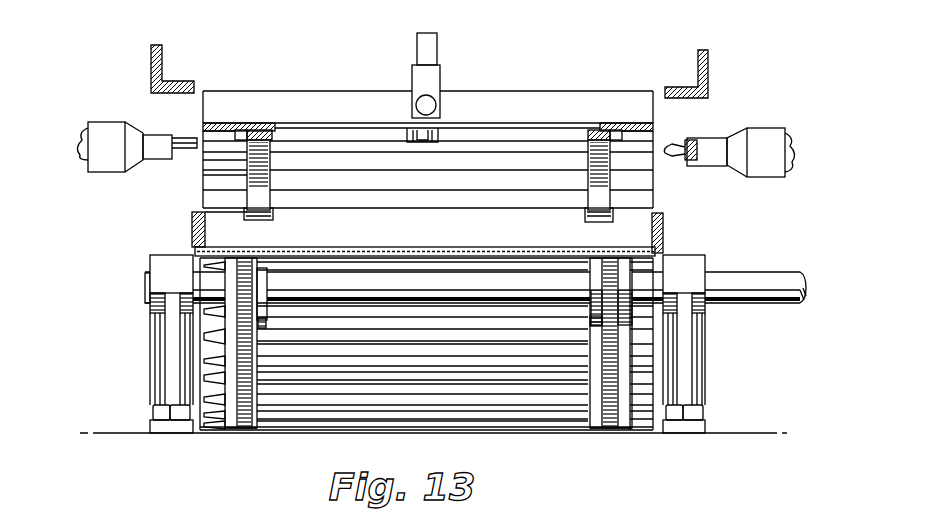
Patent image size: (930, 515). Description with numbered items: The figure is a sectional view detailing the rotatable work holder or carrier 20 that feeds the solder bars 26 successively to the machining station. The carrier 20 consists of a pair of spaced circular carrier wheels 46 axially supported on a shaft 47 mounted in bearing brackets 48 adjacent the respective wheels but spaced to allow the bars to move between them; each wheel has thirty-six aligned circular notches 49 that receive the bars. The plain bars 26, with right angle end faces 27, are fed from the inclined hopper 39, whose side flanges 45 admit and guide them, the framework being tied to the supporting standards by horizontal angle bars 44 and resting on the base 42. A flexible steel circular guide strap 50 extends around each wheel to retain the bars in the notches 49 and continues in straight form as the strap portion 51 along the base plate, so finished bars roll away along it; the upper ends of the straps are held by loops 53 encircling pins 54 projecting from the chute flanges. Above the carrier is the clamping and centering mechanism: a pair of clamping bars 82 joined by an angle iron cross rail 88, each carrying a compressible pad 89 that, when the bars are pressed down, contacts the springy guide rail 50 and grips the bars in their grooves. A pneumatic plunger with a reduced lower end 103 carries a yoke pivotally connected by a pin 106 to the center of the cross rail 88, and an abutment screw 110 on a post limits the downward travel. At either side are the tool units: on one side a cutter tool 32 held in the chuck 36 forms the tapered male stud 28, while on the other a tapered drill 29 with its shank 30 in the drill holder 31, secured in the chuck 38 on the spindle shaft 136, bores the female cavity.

The work holder or carrier 20 is at (237, 178).
The solder bar 26 is at (645, 198).
The right angle end face 27 is at (203, 176).
The male member or stud 28 is at (214, 428).
The tapered drill 29 is at (670, 143).
The drill shank 30 is at (693, 140).
The drill holder 31 is at (717, 136).
The cutter tool 32 is at (158, 137).
The chuck 36 is at (105, 125).
The chuck 38 is at (772, 130).
The hopper 39 is at (410, 256).
The base 42 is at (133, 434).
The horizontal angle bar 44 is at (150, 62).
The side flange 45 is at (196, 236).
The carrier wheel 46 is at (268, 283).
The shaft 47 is at (145, 288).
The bearing bracket 48 is at (160, 262).
The circular notch 49 is at (243, 357).
The circular guide strap 50 is at (262, 181).
The straight strap portion 51 is at (255, 433).
The loop 53 is at (592, 212).
The pin 54 is at (274, 216).
The clamping bar 82 is at (226, 128).
The angle iron cross rail 88 is at (313, 97).
The pad 89 is at (277, 130).
The reduced diameter plunger end 103 is at (432, 50).
The pin 106 is at (428, 105).
The abutment screw 110 is at (425, 135).
The spindle shaft 136 is at (80, 135).